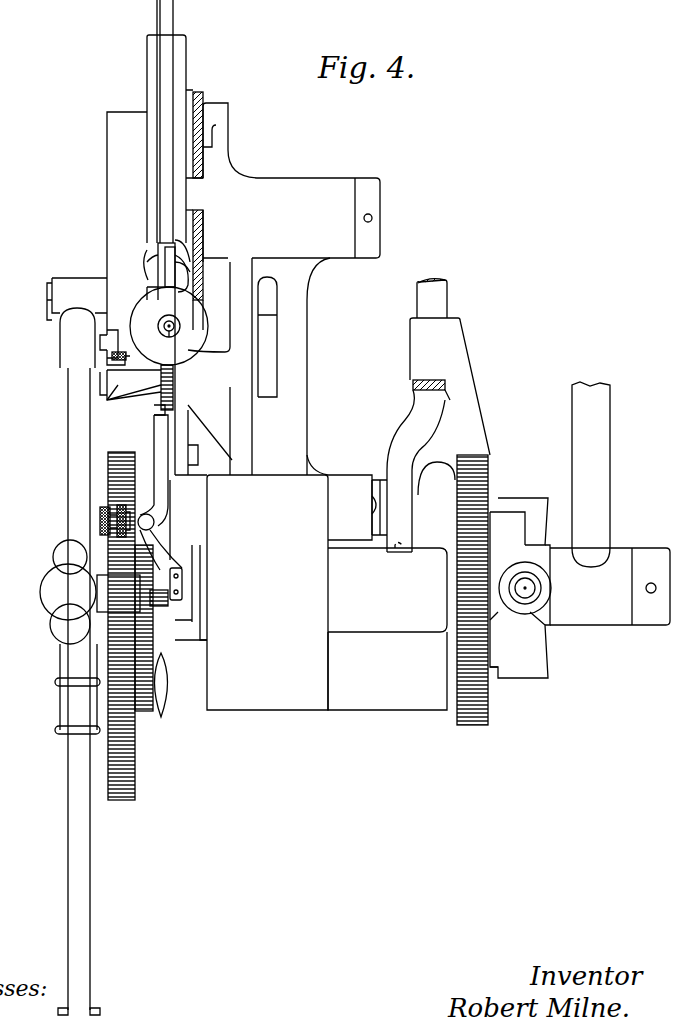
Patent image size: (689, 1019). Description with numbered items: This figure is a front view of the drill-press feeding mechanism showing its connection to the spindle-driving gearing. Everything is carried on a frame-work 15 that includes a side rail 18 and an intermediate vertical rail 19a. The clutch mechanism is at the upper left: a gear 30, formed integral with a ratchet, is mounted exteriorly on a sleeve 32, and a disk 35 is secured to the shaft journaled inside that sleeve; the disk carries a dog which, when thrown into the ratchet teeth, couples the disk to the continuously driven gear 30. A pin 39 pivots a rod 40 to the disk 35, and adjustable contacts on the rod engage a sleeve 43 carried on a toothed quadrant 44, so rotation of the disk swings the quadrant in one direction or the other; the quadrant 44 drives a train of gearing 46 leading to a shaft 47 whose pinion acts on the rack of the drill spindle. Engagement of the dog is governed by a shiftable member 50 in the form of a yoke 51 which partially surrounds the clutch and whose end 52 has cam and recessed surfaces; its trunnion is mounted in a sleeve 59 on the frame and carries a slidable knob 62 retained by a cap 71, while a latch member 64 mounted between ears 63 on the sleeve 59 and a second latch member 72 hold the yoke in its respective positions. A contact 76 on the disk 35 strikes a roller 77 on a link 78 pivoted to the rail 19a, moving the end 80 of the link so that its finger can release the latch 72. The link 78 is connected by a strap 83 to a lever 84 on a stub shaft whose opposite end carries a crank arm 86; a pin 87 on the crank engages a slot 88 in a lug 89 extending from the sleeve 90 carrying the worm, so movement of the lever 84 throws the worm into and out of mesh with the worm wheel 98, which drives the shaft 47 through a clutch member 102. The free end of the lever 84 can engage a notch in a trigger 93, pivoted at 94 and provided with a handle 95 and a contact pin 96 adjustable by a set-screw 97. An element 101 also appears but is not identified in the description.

The frame-work 15 is at (316, 314).
The side rail 18 is at (311, 592).
The intermediate vertical rail 19a is at (232, 296).
The gear 30 is at (201, 225).
The sleeve 32 is at (288, 180).
The disk 35 is at (108, 186).
The pin 39 is at (47, 292).
The rod 40 is at (70, 421).
The sleeve 43 is at (60, 704).
The toothed quadrant 44 is at (136, 793).
The train of gearing 46 is at (150, 718).
The shaft 47 is at (118, 593).
The shiftable member 50 is at (146, 35).
The yoke 51 is at (150, 62).
The end of yoke 52 is at (157, 252).
The sleeve 59 is at (186, 272).
The knob 62 is at (144, 292).
The ears 63 is at (160, 243).
The latch member 64 is at (165, 283).
The cap 71 is at (172, 320).
The latch member 72 is at (180, 377).
The contact 76 is at (117, 343).
The roller 77 is at (112, 353).
The link or bar 78 is at (118, 392).
The end of link 80 is at (159, 374).
The strap 83 is at (158, 415).
The lever or bar 84 is at (196, 447).
The crank arm 86 is at (375, 480).
The pin 87 is at (372, 505).
The slot 88 is at (395, 548).
The lug 89 is at (420, 471).
The sleeve 90 is at (470, 428).
The trigger 93 is at (160, 446).
The pivot 94 is at (156, 607).
The handle 95 is at (170, 710).
The contact pin 96 is at (153, 522).
The set-screw 97 is at (100, 515).
The worm wheel 98 is at (490, 706).
The rod 101 is at (172, 515).
The clutch member 102 is at (535, 608).